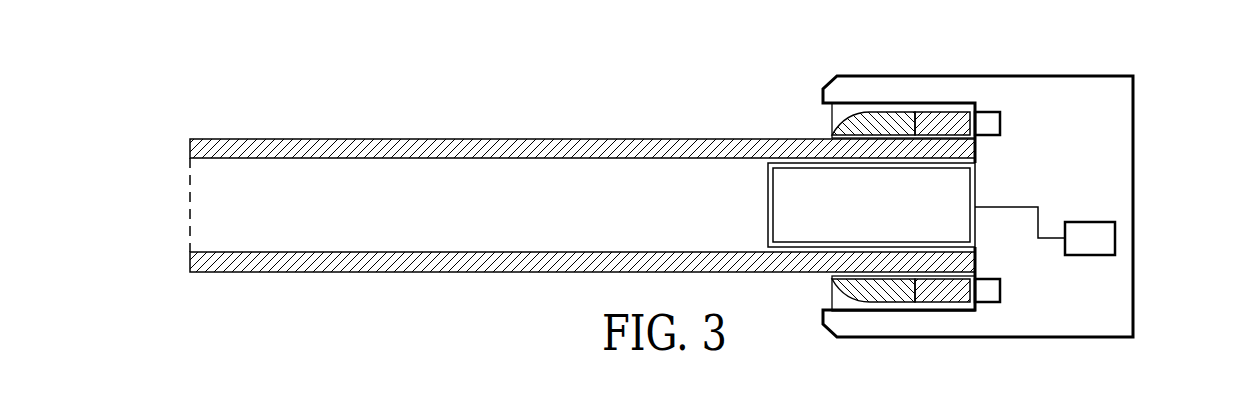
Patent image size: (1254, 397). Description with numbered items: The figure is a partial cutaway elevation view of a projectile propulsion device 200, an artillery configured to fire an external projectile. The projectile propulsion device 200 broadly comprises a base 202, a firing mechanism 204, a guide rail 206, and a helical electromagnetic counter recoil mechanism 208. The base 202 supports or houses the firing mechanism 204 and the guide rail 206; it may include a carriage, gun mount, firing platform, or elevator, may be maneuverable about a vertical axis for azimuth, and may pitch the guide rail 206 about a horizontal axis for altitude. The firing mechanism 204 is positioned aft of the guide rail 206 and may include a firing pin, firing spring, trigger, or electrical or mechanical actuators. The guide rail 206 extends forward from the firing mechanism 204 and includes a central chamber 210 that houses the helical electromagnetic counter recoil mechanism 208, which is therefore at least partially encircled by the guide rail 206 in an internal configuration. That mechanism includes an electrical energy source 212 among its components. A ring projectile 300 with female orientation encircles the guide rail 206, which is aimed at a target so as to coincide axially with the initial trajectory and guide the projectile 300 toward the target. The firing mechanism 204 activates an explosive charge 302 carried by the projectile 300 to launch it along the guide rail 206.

The projectile propulsion device 200 is at (282, 60).
The base 202 is at (1064, 76).
The firing mechanism 204 is at (1002, 125).
The guide rail 206 is at (481, 139).
The helical electromagnetic counter recoil mechanism 208 is at (792, 175).
The central chamber 210 is at (810, 163).
The electrical energy source 212 is at (1117, 240).
The ring projectile 300 is at (872, 116).
The explosive charge 302 is at (947, 114).